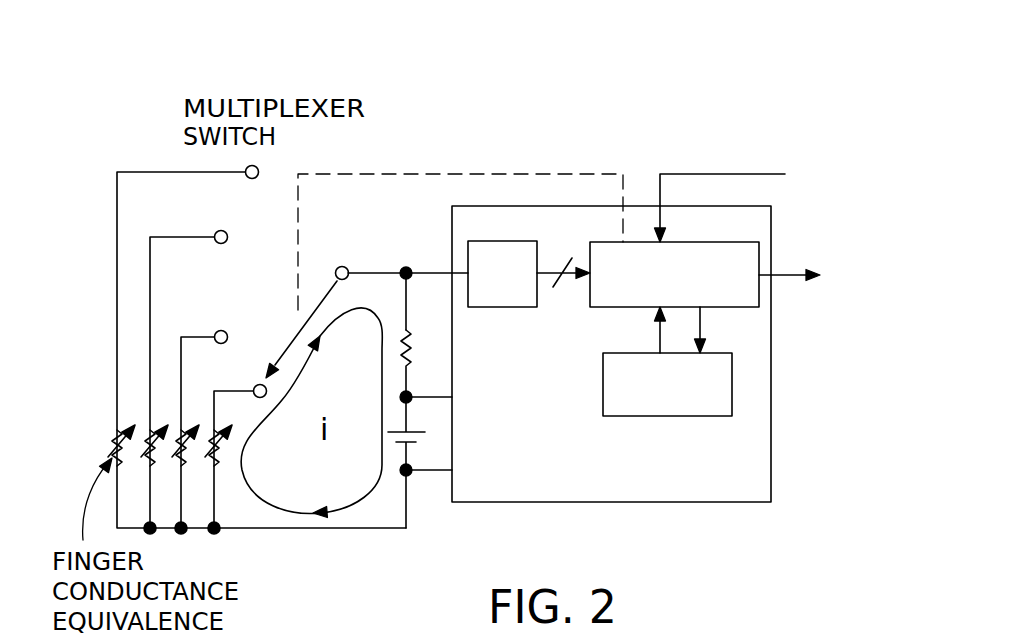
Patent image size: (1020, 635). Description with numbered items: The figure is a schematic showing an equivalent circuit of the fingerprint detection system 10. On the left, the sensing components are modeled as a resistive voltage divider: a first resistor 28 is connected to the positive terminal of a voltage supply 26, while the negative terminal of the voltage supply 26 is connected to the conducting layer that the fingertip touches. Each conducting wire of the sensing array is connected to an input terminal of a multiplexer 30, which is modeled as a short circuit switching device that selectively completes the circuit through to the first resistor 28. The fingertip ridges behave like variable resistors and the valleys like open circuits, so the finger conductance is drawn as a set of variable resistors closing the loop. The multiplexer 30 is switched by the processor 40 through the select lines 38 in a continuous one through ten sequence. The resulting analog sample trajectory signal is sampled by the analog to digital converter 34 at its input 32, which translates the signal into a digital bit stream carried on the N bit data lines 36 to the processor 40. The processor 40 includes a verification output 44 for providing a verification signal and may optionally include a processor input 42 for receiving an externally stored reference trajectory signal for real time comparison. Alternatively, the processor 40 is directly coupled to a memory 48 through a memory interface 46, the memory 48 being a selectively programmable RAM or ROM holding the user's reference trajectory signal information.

The fingerprint detection system 10 is at (604, 95).
The voltage supply 26 is at (445, 437).
The first resistor 28 is at (445, 352).
The multiplexer 30 is at (268, 272).
The input 32 is at (430, 272).
The analog to digital converter 34 is at (503, 240).
The N bit data lines 36 is at (543, 275).
The select lines 38 is at (468, 174).
The processor 40 is at (714, 242).
The processor input 42 is at (718, 174).
The verification output 44 is at (810, 270).
The memory interface 46 is at (660, 332).
The memory 48 is at (670, 416).